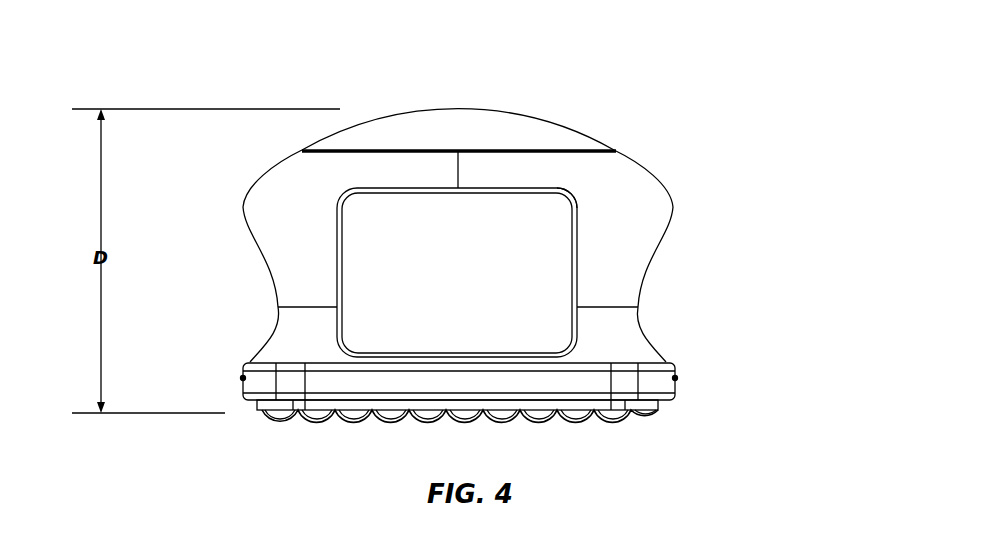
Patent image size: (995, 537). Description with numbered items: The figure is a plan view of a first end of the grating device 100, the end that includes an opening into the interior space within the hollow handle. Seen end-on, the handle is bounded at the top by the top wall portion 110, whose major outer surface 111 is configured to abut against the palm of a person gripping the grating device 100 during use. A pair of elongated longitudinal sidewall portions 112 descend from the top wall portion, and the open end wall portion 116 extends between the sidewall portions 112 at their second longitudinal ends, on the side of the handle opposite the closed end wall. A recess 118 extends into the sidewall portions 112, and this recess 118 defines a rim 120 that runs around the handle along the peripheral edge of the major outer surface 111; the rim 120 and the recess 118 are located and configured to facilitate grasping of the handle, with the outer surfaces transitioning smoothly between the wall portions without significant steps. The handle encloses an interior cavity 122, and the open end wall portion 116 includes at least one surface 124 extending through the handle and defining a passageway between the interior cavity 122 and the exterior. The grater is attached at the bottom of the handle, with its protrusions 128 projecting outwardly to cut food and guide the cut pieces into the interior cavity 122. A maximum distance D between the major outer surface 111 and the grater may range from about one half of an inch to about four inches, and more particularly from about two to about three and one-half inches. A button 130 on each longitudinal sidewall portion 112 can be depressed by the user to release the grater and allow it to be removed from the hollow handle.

The grating device 100 is at (377, 89).
The top wall portion 110 is at (546, 124).
The major outer surface 111 is at (480, 108).
The elongated longitudinal sidewall portions 112 is at (278, 288).
The open end wall portion 116 is at (302, 263).
The recess 118 is at (250, 315).
The rim 120 is at (243, 200).
The interior cavity 122 is at (495, 313).
The surface 124 is at (567, 226).
The protrusions 128 is at (315, 427).
The button 130 is at (240, 388).